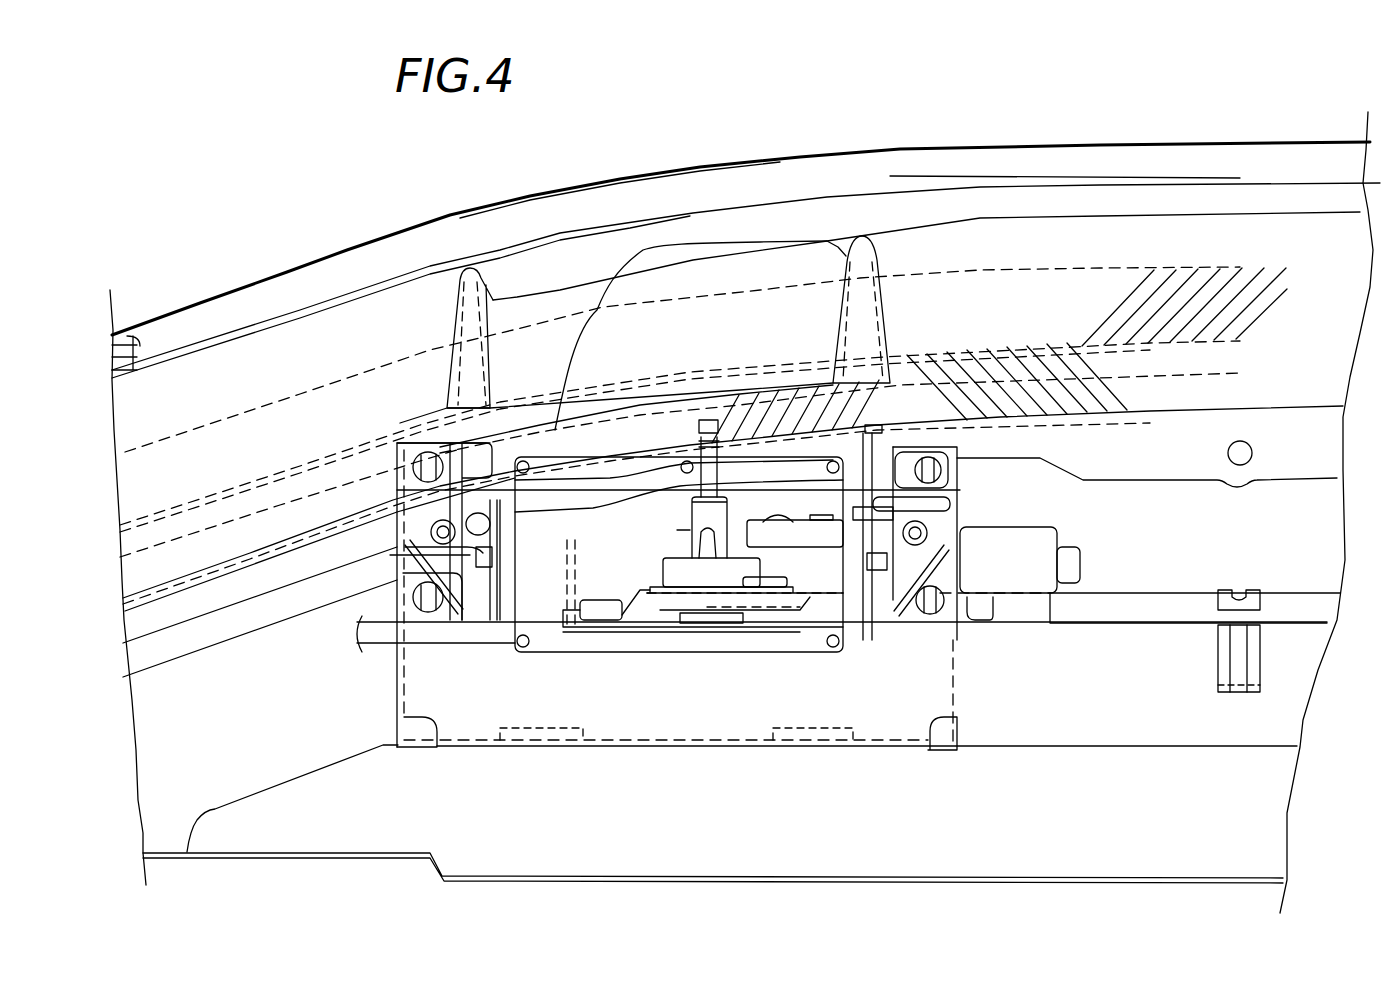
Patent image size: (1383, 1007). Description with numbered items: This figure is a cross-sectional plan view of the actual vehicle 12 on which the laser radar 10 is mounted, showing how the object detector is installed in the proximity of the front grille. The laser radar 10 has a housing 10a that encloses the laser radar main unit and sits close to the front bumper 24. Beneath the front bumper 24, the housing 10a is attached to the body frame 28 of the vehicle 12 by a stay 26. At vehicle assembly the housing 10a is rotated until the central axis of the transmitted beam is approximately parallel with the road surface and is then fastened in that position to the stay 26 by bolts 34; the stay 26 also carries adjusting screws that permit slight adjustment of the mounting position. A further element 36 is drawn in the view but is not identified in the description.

The laser radar 10 is at (679, 451).
The housing 10a is at (651, 539).
The vehicle 12 is at (338, 240).
The front bumper 24 is at (530, 193).
The stay 26 is at (594, 712).
The body frame 28 is at (1009, 829).
The bolts 34 is at (517, 515).
The support rail 36 is at (400, 560).